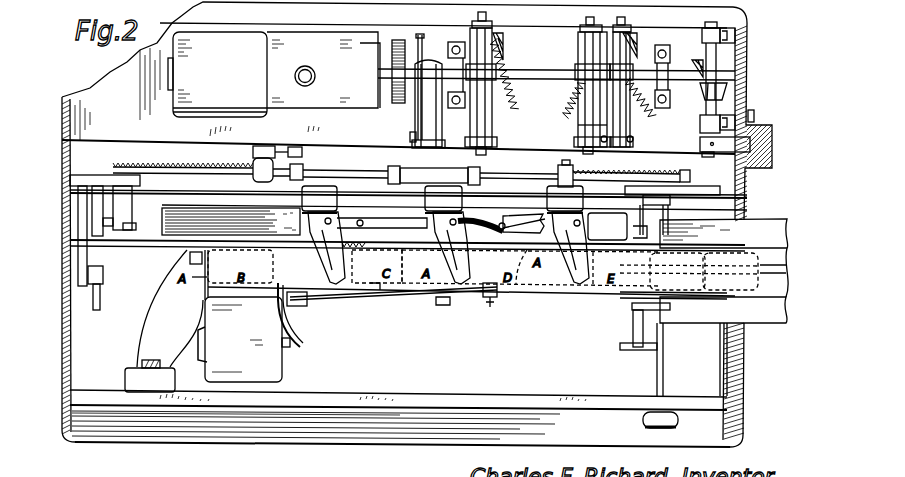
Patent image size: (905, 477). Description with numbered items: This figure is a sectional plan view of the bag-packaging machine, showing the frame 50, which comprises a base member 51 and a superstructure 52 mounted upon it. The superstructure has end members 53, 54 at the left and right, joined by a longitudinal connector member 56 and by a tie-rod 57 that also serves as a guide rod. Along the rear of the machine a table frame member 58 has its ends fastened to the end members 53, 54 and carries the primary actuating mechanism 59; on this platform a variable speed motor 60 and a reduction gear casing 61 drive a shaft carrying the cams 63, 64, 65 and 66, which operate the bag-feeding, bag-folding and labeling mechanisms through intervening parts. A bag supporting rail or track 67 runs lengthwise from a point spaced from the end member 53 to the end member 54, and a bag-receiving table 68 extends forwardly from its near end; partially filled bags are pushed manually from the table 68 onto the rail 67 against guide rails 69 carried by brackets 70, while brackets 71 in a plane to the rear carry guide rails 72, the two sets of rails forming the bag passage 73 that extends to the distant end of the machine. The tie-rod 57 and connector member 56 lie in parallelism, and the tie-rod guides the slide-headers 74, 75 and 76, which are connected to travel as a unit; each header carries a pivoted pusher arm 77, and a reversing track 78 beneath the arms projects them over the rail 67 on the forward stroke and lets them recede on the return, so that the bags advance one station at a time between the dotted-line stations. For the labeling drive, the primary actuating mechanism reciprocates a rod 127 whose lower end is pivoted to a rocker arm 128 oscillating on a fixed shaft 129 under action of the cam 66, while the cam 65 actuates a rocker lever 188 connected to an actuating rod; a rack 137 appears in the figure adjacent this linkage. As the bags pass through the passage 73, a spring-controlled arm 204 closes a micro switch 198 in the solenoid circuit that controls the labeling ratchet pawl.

The frame 50 is at (290, 443).
The base member 51 is at (395, 432).
The superstructure 52 is at (66, 232).
The end member 53 is at (404, 222).
The end member 54 is at (749, 45).
The longitudinal connector member 56 is at (426, 400).
The tie-rod 57 is at (378, 199).
The table frame member 58 is at (517, 40).
The primary actuating mechanism 59 is at (578, 66).
The variable speed motor 60 is at (217, 74).
The reduction gear casing 61 is at (327, 43).
The cam 63 is at (421, 52).
The cam 64 is at (472, 118).
The cam 65 is at (583, 124).
The cam 66 is at (607, 118).
The supporting rail 67 is at (548, 291).
The bag-receiving table 68 is at (207, 321).
The guide rail 69 is at (379, 291).
The upright or bracket 70 is at (302, 313).
The upright or bracket 71 is at (93, 258).
The guide rail 72 is at (302, 249).
The bag passage 73 is at (522, 300).
The slide-header 74 is at (319, 199).
The slide-header 75 is at (443, 199).
The slide-header 76 is at (565, 199).
The pusher arm 77 is at (343, 266).
The reversing track 78 is at (490, 216).
The rod 127 is at (637, 146).
The rocker arm 128 is at (628, 43).
The fixed shaft 129 is at (544, 79).
The rack 137 is at (608, 169).
The rocker lever 188 is at (570, 115).
The micro switch 198 is at (443, 312).
The spring-controlled arm 204 is at (476, 304).